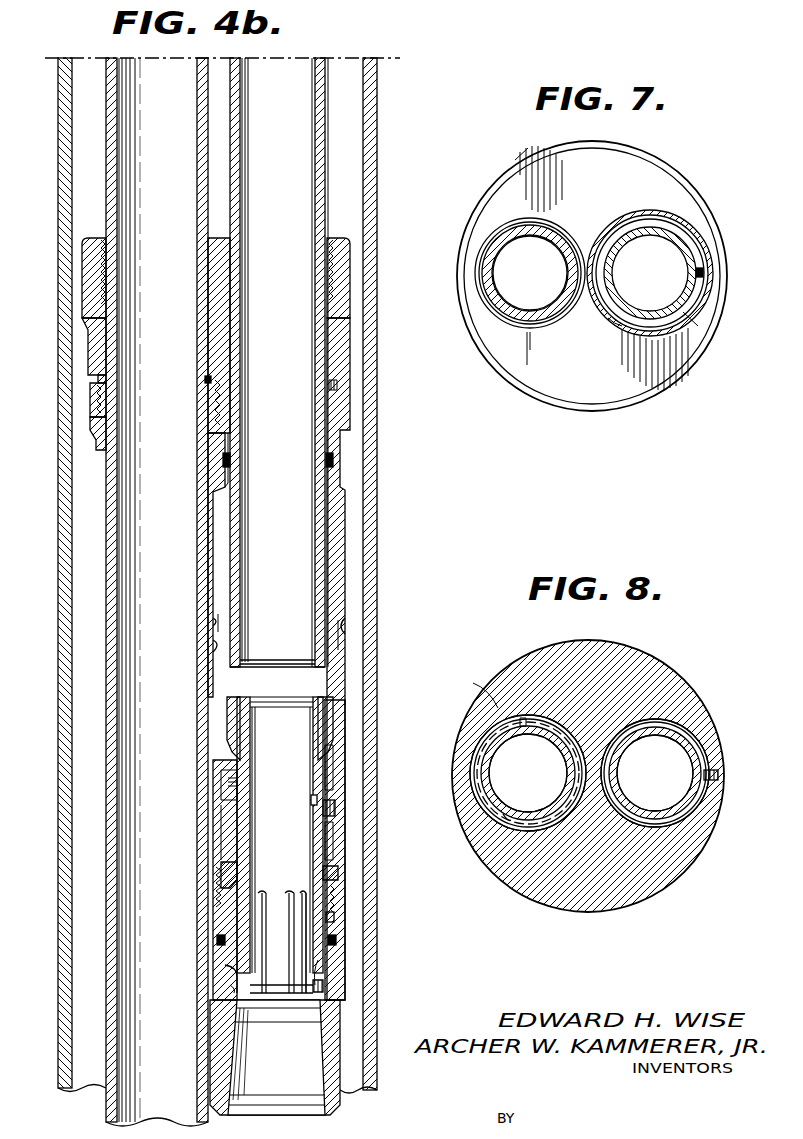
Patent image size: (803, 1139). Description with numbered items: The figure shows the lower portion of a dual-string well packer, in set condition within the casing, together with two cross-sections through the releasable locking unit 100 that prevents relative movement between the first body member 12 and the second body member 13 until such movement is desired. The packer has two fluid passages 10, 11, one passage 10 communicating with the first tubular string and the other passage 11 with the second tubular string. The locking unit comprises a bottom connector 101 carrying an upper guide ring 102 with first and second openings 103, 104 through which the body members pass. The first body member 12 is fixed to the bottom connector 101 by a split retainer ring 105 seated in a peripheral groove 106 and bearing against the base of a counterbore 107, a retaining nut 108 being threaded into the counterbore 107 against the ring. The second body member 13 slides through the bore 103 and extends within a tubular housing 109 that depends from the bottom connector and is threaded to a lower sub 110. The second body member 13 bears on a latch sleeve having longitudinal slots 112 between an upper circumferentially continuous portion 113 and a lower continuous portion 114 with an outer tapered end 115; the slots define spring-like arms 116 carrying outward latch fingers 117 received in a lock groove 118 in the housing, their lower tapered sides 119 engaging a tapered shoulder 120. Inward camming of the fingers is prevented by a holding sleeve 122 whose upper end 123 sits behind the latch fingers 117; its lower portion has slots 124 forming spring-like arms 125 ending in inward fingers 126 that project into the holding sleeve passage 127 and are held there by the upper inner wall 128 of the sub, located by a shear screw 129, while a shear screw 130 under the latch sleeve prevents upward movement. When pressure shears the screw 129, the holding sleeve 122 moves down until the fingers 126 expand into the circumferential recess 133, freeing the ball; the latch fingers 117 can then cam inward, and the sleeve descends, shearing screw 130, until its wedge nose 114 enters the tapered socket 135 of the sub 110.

In FIG. 4B, the fluid passage 10 is at (165, 590).
In FIG. 7, the fluid passage 10 is at (530, 273).
In FIG. 8, the fluid passage 10 is at (528, 773).
In FIG. 4B, the fluid passage 11 is at (277, 362).
In FIG. 8, the fluid passage 11 is at (655, 773).
In FIG. 4B, the first body member 12 is at (108, 117).
In FIG. 7, the first body member 12 is at (497, 308).
In FIG. 8, the first body member 12 is at (516, 738).
In FIG. 4B, the second body member 13 is at (322, 125).
In FIG. 8, the second body member 13 is at (674, 813).
In FIG. 4B, the releasable locking unit 100 is at (345, 700).
In FIG. 4B, the bottom connector 101 is at (341, 363).
In FIG. 7, the bottom connector 101 is at (628, 156).
In FIG. 8, the bottom connector 101 is at (604, 648).
In FIG. 4B, the upper guide ring 102 is at (86, 269).
In FIG. 4B, the first opening 103 is at (323, 338).
In FIG. 4B, the second opening 104 is at (108, 344).
In FIG. 4B, the split retainer ring 105 is at (206, 378).
In FIG. 8, the split retainer ring 105 is at (516, 718).
In FIG. 4B, the peripheral groove 106 is at (104, 381).
In FIG. 8, the peripheral groove 106 is at (506, 817).
In FIG. 4B, the counterbore 107 is at (97, 393).
In FIG. 8, the counterbore 107 is at (482, 740).
In FIG. 4B, the retaining nut 108 is at (98, 438).
In FIG. 7, the retaining nut 108 is at (485, 250).
In FIG. 8, the retaining nut 108 is at (482, 814).
In FIG. 4B, the tubular housing 109 is at (340, 627).
In FIG. 7, the tubular housing 109 is at (618, 326).
In FIG. 8, the tubular housing 109 is at (702, 752).
In FIG. 4B, the lower sub 110 is at (333, 1067).
In FIG. 7, the longitudinal slots 112 is at (690, 320).
In FIG. 4B, the upper circumferentially continuous portion 113 is at (228, 712).
In FIG. 4B, the lower circumferentially continuous portion 114 is at (220, 876).
In FIG. 4B, the outer tapered end 115 is at (220, 895).
In FIG. 4B, the spring-like arms 116 is at (325, 765).
In FIG. 7, the spring-like arms 116 is at (690, 228).
In FIG. 4B, the latch fingers 117 is at (333, 808).
In FIG. 4B, the lock groove 118 is at (222, 623).
In FIG. 4B, the lower tapered sides 119 is at (330, 835).
In FIG. 4B, the tapered flange or shoulder 120 is at (220, 647).
In FIG. 4B, the holding sleeve 122 is at (240, 783).
In FIG. 7, the holding sleeve 122 is at (703, 270).
In FIG. 4B, the upper end 123 is at (316, 718).
In FIG. 4B, the slots 124 is at (267, 930).
In FIG. 4B, the spring-like arms 125 is at (318, 955).
In FIG. 4B, the fingers 126 is at (235, 993).
In FIG. 4B, the holding sleeve passage 127 is at (280, 835).
In FIG. 7, the holding sleeve passage 127 is at (650, 273).
In FIG. 4B, the upper inner wall 128 is at (320, 903).
In FIG. 4B, the shear screw 129 is at (330, 917).
In FIG. 4B, the shear screw 130 is at (313, 800).
In FIG. 4B, the circumferential recess 133 is at (320, 988).
In FIG. 4B, the tapered socket 135 is at (328, 877).